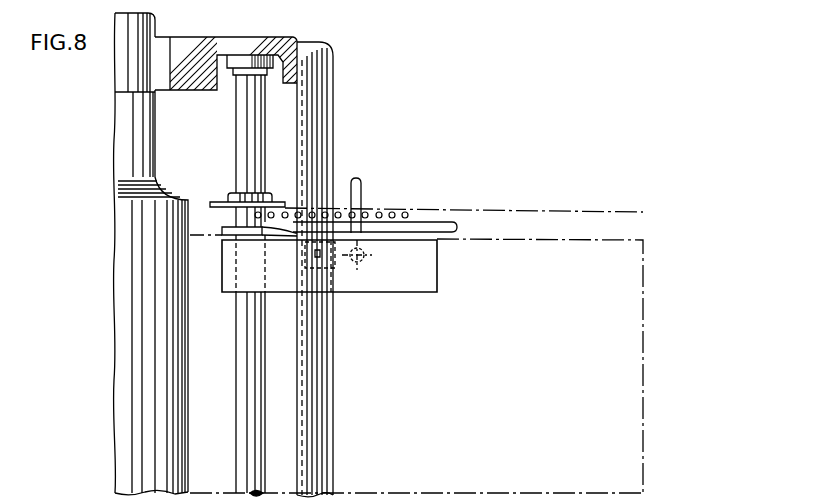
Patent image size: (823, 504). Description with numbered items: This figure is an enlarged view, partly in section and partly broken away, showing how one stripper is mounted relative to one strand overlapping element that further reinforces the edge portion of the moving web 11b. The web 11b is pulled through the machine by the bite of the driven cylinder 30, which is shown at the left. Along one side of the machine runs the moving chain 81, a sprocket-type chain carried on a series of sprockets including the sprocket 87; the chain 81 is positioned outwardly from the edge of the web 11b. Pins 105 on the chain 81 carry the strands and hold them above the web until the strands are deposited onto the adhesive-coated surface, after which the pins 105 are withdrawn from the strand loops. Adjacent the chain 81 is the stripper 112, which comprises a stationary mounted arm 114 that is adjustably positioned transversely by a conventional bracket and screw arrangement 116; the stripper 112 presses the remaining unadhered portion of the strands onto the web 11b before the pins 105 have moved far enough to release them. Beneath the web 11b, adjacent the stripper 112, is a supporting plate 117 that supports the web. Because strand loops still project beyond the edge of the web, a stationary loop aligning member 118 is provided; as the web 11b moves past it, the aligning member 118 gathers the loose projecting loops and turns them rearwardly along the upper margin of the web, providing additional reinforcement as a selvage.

The cylinder 30 is at (122, 260).
The sprocket 87 is at (217, 200).
The loop aligning member 118 is at (227, 237).
The stripper 112 is at (443, 223).
The pins 105 is at (391, 211).
The stationary mounted arm 114 is at (358, 177).
The moving chain 81 is at (578, 210).
The supporting plate 117 is at (423, 280).
The bracket and screw arrangement 116 is at (345, 268).
The web 11b is at (600, 242).